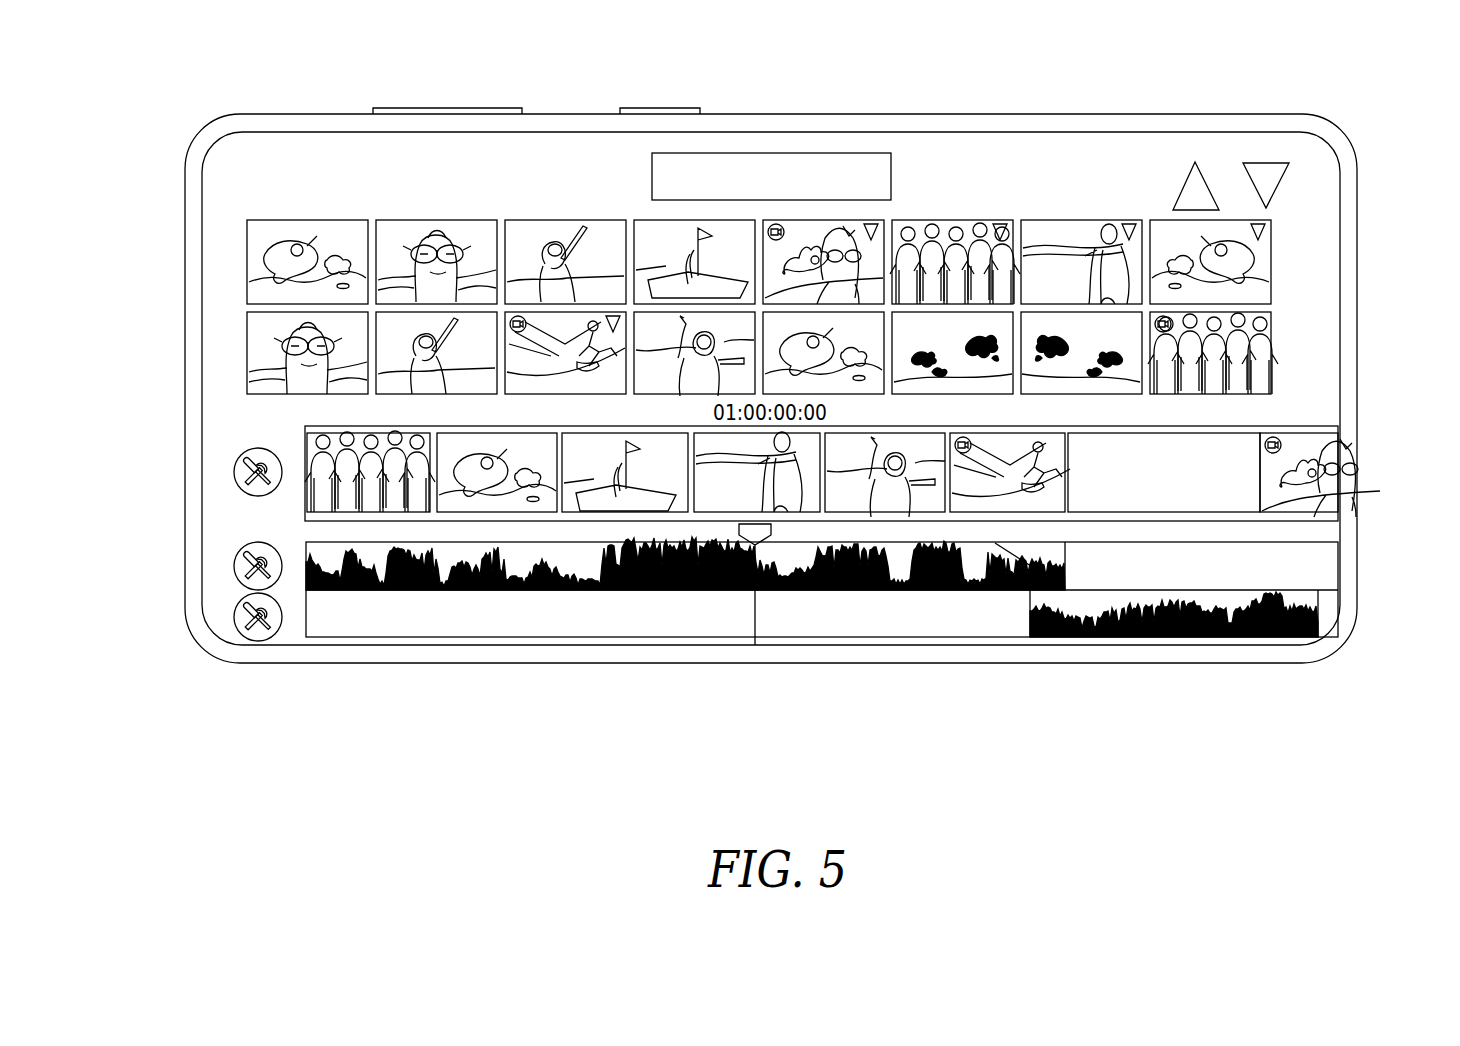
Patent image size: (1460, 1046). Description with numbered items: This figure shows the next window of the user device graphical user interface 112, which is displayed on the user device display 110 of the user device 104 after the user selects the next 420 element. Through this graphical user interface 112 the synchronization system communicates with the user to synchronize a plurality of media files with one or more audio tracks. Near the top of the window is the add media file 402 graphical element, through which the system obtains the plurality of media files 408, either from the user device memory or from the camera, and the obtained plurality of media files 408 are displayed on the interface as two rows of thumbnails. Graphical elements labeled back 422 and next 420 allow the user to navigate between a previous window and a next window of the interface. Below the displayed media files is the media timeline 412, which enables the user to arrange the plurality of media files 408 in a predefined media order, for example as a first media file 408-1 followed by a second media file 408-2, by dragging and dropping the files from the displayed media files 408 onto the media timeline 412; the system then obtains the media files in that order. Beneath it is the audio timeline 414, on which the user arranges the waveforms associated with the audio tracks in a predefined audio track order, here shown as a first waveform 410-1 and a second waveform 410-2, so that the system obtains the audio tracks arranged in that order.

The user device 104 is at (249, 112).
The user device display 110 is at (1060, 116).
The user device graphical user interface 112 is at (1317, 183).
The add media file 402 is at (823, 153).
The plurality of media files 408 is at (245, 400).
The media file 408-1 is at (363, 510).
The media file 408-2 is at (465, 432).
The waveform 410-1 is at (887, 580).
The waveform 410-2 is at (1262, 598).
The media timeline 412 is at (1202, 470).
The audio timeline 414 is at (1230, 572).
The next 420 is at (1287, 172).
The back 422 is at (1177, 195).